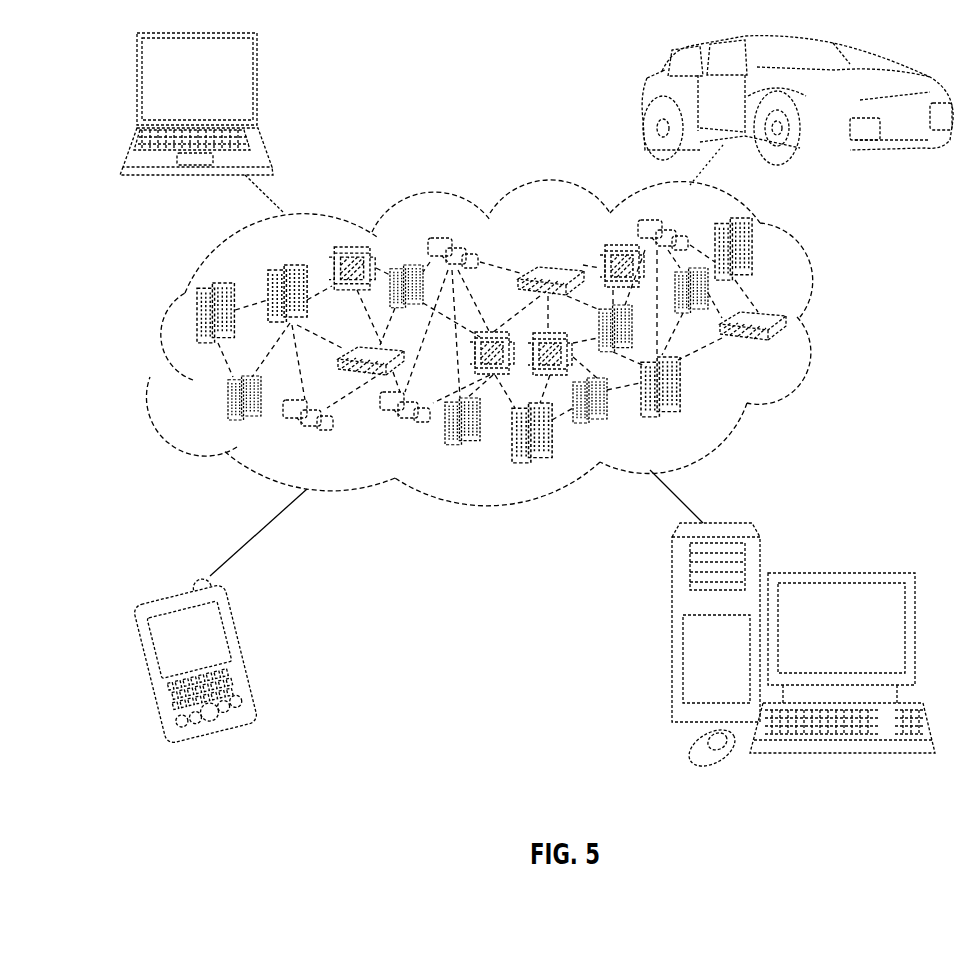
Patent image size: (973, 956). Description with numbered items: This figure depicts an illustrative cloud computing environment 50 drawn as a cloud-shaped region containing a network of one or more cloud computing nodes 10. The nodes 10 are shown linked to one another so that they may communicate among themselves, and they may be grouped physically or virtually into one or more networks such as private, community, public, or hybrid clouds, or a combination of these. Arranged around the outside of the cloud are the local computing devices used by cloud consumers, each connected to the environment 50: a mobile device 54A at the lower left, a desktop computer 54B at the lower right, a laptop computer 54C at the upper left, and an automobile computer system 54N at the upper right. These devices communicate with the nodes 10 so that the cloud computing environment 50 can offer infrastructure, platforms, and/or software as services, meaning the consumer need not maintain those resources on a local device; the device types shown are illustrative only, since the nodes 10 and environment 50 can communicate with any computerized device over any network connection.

The cloud computing nodes 10 is at (790, 349).
The cloud computing environment 50 is at (838, 326).
The mobile device 54A is at (250, 657).
The desktop computer 54B is at (838, 572).
The laptop computer 54C is at (257, 86).
The automobile computer system 54N is at (646, 102).